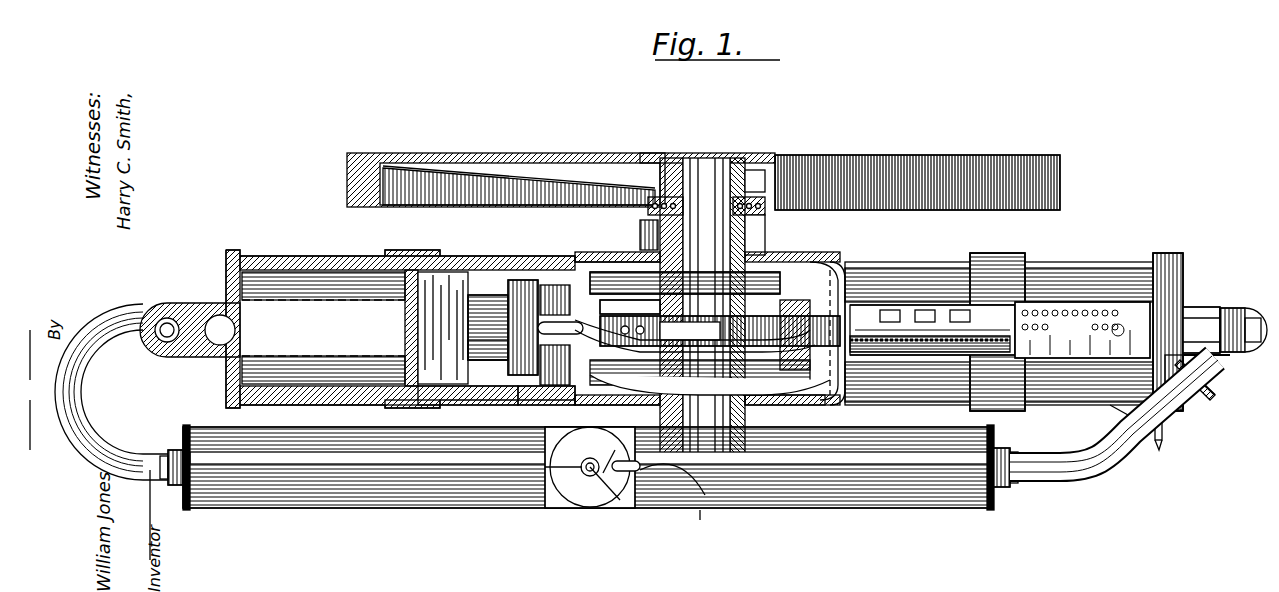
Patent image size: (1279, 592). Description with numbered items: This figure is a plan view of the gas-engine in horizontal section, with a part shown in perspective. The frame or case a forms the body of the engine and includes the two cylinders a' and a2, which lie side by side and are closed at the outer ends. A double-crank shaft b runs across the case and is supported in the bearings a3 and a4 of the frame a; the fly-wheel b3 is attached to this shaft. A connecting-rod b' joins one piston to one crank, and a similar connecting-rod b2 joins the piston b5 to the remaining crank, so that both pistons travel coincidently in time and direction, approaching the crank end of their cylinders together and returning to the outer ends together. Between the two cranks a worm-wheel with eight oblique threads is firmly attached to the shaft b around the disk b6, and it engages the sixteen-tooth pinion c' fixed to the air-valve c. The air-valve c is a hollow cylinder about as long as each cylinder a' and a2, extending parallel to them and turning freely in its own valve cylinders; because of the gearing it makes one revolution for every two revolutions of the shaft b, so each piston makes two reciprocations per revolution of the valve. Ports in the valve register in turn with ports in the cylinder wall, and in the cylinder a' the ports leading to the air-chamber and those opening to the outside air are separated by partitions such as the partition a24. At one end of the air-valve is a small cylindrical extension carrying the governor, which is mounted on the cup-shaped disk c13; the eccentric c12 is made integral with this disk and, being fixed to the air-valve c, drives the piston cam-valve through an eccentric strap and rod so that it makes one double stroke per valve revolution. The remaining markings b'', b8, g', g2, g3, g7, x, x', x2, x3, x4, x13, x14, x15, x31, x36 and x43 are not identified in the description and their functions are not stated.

The frame or case a is at (704, 321).
The cylinder a' is at (546, 404).
The cylinder a2 is at (323, 328).
The bearing a3 is at (748, 405).
The bearing a4 is at (748, 236).
The partition a24 is at (520, 395).
The double-crank shaft b is at (707, 293).
The connecting-rod b' is at (503, 327).
The packing b'' is at (627, 229).
The connecting-rod b2 is at (702, 357).
The fly-wheel b3 is at (1062, 176).
The piston b5 is at (418, 318).
The disk b6 is at (715, 309).
The piston rod b8 is at (508, 345).
The air-valve c is at (930, 340).
The pinion c' is at (1082, 330).
The eccentric c12 is at (1222, 308).
The cup-shaped disk c13 is at (1250, 352).
The needle g' is at (1202, 377).
The needle stem g2 is at (1165, 420).
The needle lever g3 is at (1115, 407).
The needle guide g7 is at (1210, 370).
The reservoir cylinder x is at (588, 480).
The cylinder end x' is at (890, 476).
The cylinder coupling x2 is at (183, 435).
The cylinder coupling x3 is at (1015, 452).
The cylinder nipple x4 is at (167, 444).
The crank x13 is at (625, 490).
The delivery hose x14 is at (1098, 452).
The supply hose x15 is at (111, 392).
The lever x31 is at (672, 479).
The wheel x36 is at (560, 490).
The cylinder shell x43 is at (694, 523).